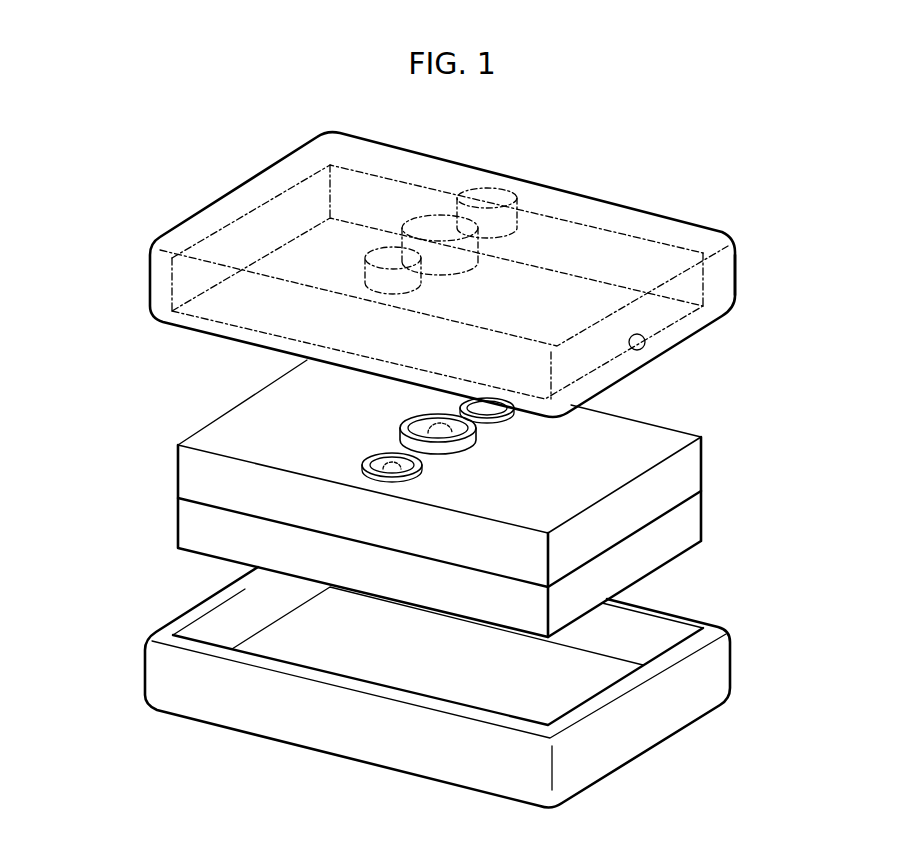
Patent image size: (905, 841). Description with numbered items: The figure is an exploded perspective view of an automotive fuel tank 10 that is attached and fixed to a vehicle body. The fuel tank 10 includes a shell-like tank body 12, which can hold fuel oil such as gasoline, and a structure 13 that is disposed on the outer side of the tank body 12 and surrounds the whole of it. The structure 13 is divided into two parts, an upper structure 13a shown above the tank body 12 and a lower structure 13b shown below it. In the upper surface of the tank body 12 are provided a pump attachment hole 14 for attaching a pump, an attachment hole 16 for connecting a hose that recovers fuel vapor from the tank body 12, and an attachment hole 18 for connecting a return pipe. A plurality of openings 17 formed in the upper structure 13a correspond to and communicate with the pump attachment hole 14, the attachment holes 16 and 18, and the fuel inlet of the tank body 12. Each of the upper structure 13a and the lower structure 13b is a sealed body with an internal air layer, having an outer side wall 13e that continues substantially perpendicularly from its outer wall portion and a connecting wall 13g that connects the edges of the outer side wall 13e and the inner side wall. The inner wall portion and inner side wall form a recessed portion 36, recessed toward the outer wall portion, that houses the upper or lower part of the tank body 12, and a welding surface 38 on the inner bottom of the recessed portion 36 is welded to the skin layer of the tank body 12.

The fuel tank 10 is at (614, 170).
The tank body 12 is at (712, 463).
The structure 13 is at (76, 621).
The upper structure 13a is at (131, 271).
The lower structure 13b is at (131, 668).
The outer side wall 13e is at (740, 268).
The connecting wall 13g is at (622, 688).
The pump attachment hole 14 is at (450, 434).
The attachment hole 16 is at (488, 418).
The openings 17 is at (386, 262).
The attachment hole 18 is at (399, 470).
The recessed portion 36 is at (648, 349).
The welding surface 38 is at (380, 647).